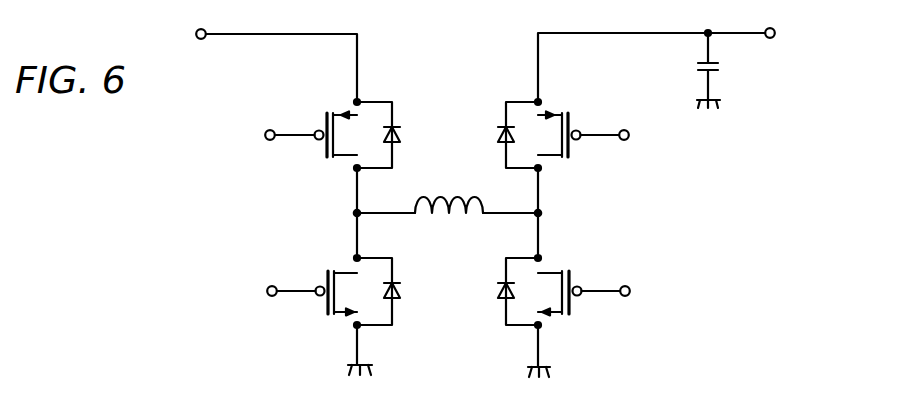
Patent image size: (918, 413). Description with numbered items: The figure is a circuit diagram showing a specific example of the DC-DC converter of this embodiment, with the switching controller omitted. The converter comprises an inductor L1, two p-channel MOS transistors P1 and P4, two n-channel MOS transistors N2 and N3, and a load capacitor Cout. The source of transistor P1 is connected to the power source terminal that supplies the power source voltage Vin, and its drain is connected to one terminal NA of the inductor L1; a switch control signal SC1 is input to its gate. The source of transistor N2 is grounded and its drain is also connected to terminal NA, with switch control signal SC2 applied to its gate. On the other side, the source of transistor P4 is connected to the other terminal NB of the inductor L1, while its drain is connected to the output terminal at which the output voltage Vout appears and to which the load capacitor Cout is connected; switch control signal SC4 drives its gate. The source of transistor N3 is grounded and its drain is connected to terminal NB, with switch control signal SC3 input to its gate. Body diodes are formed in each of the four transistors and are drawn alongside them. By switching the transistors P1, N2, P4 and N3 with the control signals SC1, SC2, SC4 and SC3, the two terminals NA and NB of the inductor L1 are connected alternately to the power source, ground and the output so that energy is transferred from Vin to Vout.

The power source voltage Vin is at (181, 36).
The output voltage Vout is at (795, 36).
The load capacitor Cout is at (734, 69).
The p-channel MOS transistor P1 is at (355, 128).
The p-channel MOS transistor P4 is at (543, 128).
The n-channel MOS transistor N2 is at (355, 285).
The n-channel MOS transistor N3 is at (544, 285).
The switch control signal SC1 is at (266, 140).
The switch control signal SC2 is at (267, 295).
The switch control signal SC3 is at (632, 295).
The switch control signal SC4 is at (631, 140).
The inductor L1 is at (449, 192).
The terminal of inductor NA is at (354, 212).
The other terminal of inductor NB is at (541, 212).